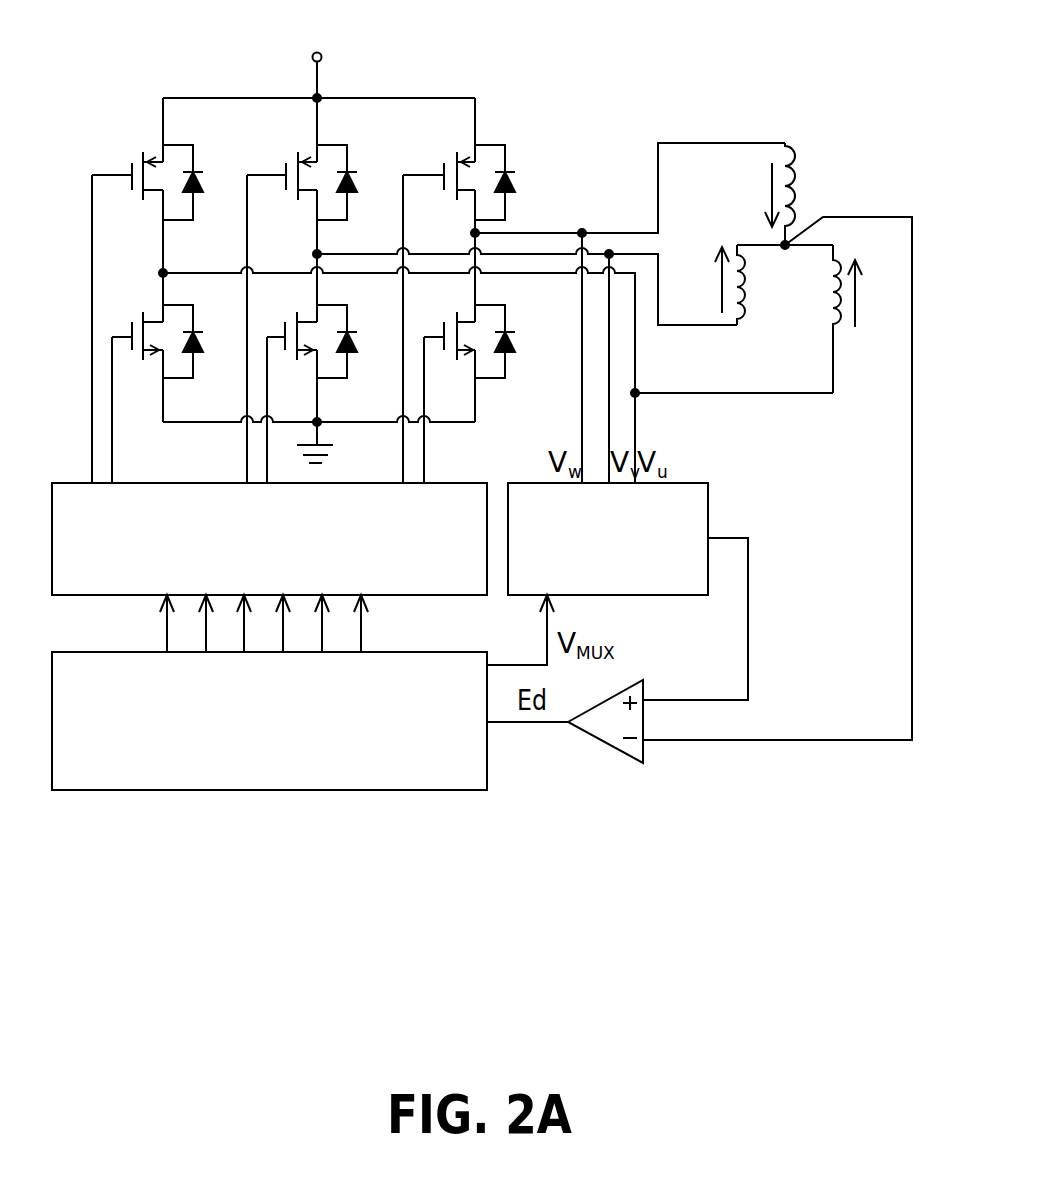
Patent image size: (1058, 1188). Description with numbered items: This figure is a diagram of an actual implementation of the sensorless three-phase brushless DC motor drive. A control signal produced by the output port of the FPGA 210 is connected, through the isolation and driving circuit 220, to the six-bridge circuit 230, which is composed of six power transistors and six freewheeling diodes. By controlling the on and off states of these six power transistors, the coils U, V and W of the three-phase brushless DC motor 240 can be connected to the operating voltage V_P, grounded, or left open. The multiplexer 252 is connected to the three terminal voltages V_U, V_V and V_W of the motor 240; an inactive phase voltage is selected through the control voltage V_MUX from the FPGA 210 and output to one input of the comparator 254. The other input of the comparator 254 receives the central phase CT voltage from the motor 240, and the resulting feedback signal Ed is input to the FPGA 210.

The FPGA 210 is at (397, 652).
The isolation and driving circuit 220 is at (150, 482).
The six-bridge circuit 230 is at (78, 133).
The three-phase brushless DC motor 240 is at (857, 168).
The multiplexer 252 is at (693, 483).
The comparator 254 is at (595, 738).